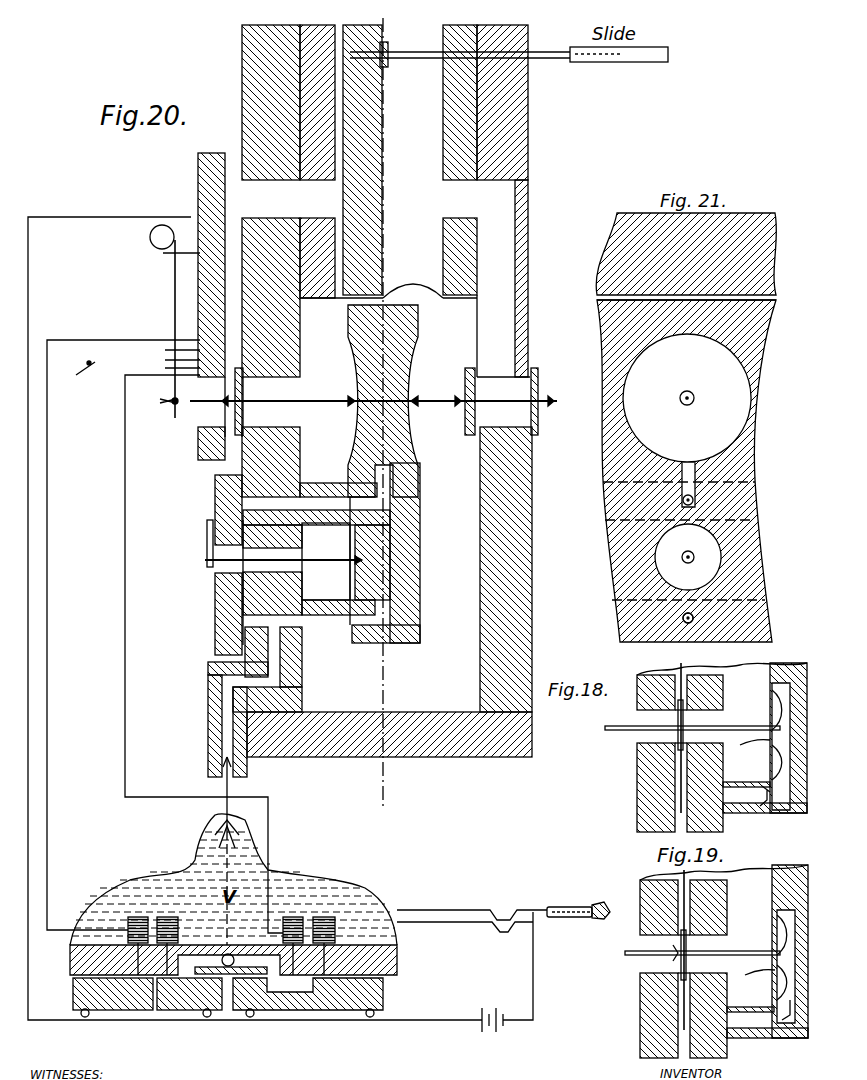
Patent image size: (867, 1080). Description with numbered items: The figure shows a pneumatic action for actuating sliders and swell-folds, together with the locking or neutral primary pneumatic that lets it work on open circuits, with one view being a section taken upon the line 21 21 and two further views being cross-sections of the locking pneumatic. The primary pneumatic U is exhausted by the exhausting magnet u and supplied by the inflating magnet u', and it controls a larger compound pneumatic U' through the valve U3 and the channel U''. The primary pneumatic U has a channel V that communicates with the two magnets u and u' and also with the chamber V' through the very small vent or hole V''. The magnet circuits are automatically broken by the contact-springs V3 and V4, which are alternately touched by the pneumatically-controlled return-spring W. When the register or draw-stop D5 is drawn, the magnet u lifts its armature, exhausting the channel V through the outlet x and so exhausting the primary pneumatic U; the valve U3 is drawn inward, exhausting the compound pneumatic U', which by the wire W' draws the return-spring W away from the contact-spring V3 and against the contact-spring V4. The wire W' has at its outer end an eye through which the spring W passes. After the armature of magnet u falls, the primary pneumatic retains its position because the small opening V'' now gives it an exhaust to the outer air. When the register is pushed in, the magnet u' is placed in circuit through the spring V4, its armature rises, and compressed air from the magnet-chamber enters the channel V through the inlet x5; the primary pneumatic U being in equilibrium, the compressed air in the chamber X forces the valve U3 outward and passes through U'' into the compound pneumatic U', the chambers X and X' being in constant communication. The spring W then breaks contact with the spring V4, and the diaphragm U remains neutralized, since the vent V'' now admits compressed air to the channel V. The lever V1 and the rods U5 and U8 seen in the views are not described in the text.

In FIG. 20, the channel V is at (253, 708).
In FIG. 21, the channel V is at (686, 471).
In FIG. 18, the channel V is at (722, 744).
In FIG. 19, the channel V is at (724, 965).
In FIG. 18, the chamber V' is at (697, 730).
In FIG. 19, the chamber V' is at (656, 942).
In FIG. 20, the vent or hole V'' is at (222, 698).
In FIG. 21, the vent or hole V'' is at (711, 614).
In FIG. 18, the vent or hole V'' is at (684, 794).
In FIG. 19, the vent or hole V'' is at (695, 1017).
In FIG. 20, the valve lever V1 is at (215, 532).
In FIG. 20, the contact-spring V3 is at (157, 352).
In FIG. 20, the contact-spring V4 is at (112, 363).
In FIG. 21, the contact-spring V4 is at (692, 472).
In FIG. 20, the primary pneumatic U is at (283, 582).
In FIG. 21, the primary pneumatic U is at (697, 552).
In FIG. 20, the compound pneumatic U' is at (365, 401).
In FIG. 18, the compound pneumatic U' is at (755, 748).
In FIG. 19, the compound pneumatic U' is at (757, 978).
In FIG. 20, the channel U'' is at (338, 484).
In FIG. 20, the valve U3 is at (215, 568).
In FIG. 18, the push rod U5 is at (650, 726).
In FIG. 19, the push rod U8 is at (675, 950).
In FIG. 20, the return-spring W is at (346, 401).
In FIG. 20, the wire W' is at (324, 388).
In FIG. 21, the wire W' is at (705, 393).
In FIG. 20, the chamber X is at (326, 561).
In FIG. 20, the chamber X' is at (389, 592).
In FIG. 20, the outlet x is at (155, 1012).
In FIG. 20, the inlet x5 is at (397, 958).
In FIG. 20, the exhausting magnet u is at (204, 946).
In FIG. 20, the inflating magnet u' is at (336, 946).
In FIG. 20, the register or draw-stop D5 is at (612, 906).
In FIG. 20, the section line 21 is at (387, 415).